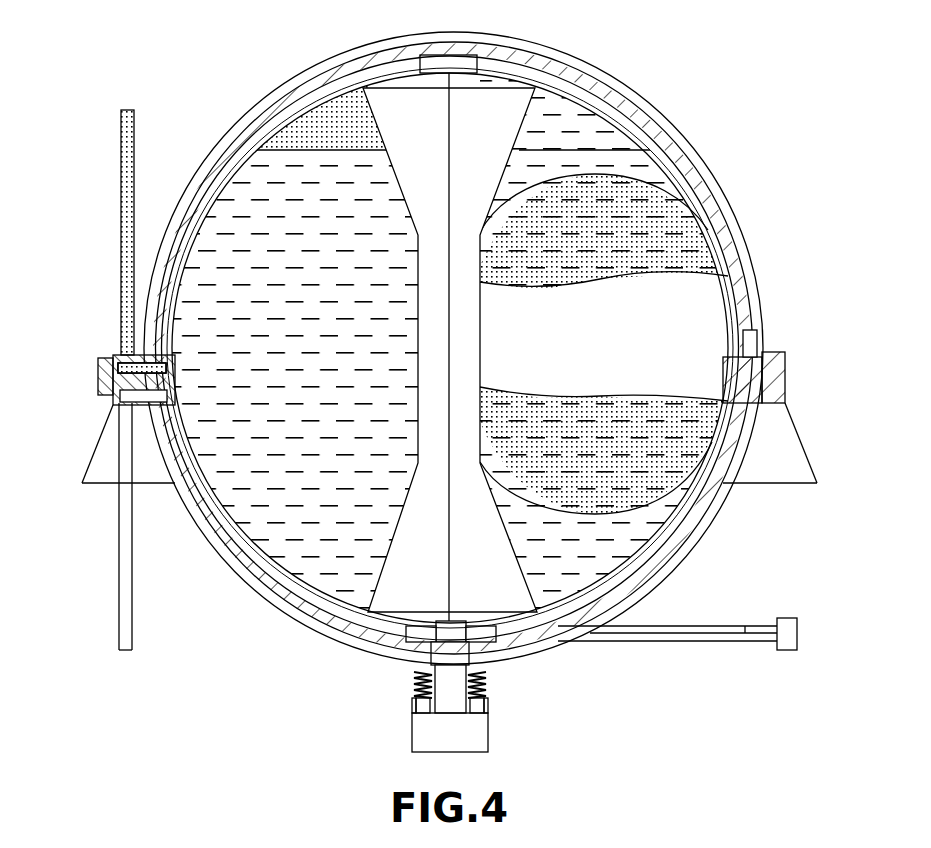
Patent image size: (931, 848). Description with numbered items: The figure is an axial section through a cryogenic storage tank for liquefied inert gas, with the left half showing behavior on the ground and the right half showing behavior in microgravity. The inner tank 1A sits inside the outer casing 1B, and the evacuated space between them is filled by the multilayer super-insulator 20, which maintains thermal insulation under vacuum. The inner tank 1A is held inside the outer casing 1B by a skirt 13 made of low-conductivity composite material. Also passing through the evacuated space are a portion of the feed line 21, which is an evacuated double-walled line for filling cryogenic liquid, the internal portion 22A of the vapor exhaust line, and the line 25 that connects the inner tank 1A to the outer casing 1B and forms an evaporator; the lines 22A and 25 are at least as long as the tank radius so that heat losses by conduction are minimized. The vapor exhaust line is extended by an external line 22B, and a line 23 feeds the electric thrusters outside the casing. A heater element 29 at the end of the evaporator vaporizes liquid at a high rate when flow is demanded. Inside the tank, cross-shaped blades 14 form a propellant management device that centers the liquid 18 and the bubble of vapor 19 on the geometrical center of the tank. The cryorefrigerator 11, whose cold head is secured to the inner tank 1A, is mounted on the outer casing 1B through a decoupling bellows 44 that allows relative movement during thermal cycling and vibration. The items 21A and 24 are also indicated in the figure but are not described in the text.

The inner tank 1A is at (301, 128).
The outer casing 1B is at (307, 77).
The cryorefrigerator 11 is at (378, 740).
The skirt 13 is at (745, 378).
The cross-shaped blades 14 is at (408, 587).
The liquid 18 is at (575, 132).
The bubble of vapor 19 is at (338, 120).
The multilayer super-insulator 20 is at (272, 596).
The feed line 21 is at (668, 642).
The arm end block 21A is at (787, 652).
The internal portion of vapor exhaust line 22A is at (188, 212).
The external line 22B is at (118, 288).
The thruster feed line 23 is at (127, 652).
The bracket 24 is at (100, 444).
The evaporator connection line 25 is at (243, 550).
The heater element 29 is at (98, 381).
The decoupling bellows 44 is at (487, 687).